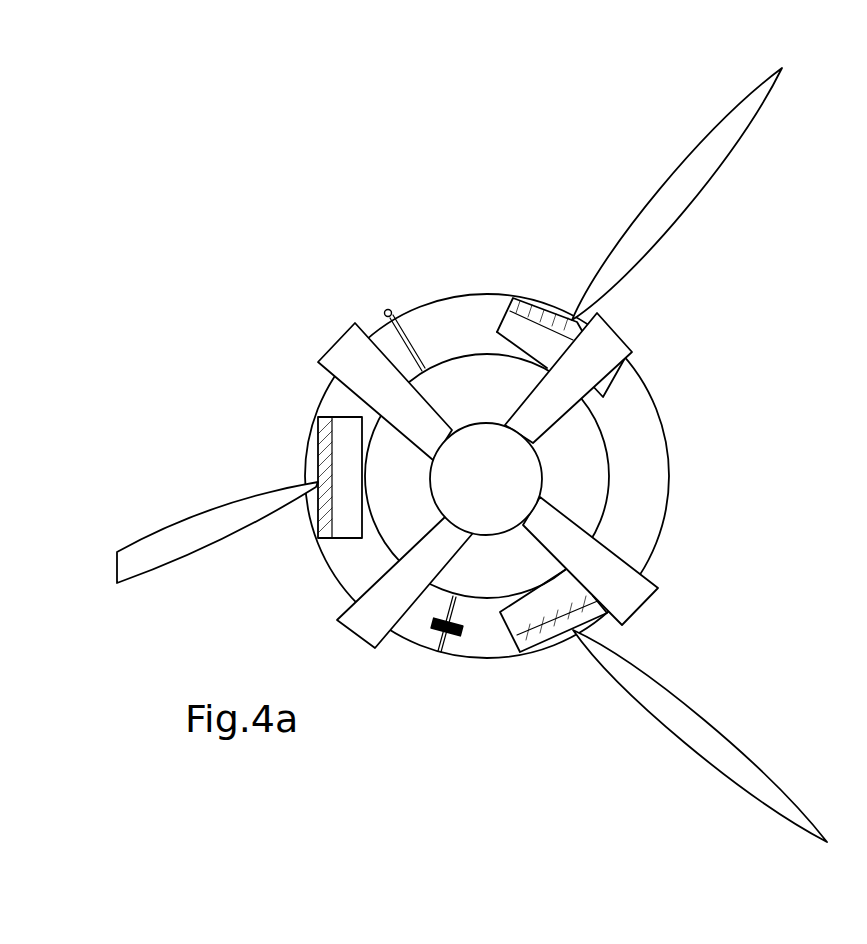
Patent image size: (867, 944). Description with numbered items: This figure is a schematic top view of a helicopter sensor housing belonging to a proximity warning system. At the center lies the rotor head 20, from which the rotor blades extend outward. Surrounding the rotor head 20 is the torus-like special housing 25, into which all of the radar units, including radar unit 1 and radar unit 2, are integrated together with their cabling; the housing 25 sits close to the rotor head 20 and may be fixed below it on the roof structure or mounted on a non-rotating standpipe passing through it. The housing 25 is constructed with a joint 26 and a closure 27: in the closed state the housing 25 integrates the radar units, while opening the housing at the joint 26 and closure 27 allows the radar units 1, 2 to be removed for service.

The radar unit 1 is at (531, 292).
The radar unit 2 is at (323, 442).
The rotor head 20 is at (482, 439).
The housing 25 is at (411, 294).
The joint 26 is at (388, 309).
The closure 27 is at (448, 656).